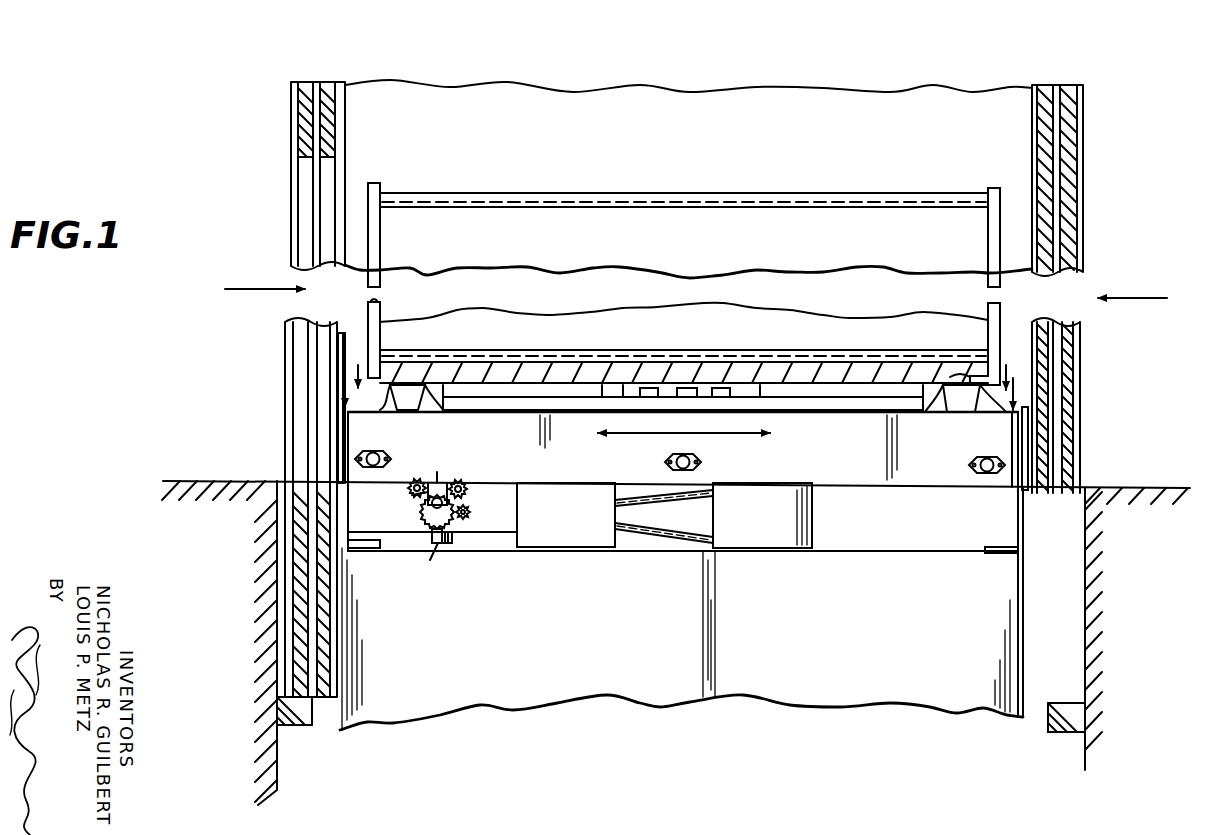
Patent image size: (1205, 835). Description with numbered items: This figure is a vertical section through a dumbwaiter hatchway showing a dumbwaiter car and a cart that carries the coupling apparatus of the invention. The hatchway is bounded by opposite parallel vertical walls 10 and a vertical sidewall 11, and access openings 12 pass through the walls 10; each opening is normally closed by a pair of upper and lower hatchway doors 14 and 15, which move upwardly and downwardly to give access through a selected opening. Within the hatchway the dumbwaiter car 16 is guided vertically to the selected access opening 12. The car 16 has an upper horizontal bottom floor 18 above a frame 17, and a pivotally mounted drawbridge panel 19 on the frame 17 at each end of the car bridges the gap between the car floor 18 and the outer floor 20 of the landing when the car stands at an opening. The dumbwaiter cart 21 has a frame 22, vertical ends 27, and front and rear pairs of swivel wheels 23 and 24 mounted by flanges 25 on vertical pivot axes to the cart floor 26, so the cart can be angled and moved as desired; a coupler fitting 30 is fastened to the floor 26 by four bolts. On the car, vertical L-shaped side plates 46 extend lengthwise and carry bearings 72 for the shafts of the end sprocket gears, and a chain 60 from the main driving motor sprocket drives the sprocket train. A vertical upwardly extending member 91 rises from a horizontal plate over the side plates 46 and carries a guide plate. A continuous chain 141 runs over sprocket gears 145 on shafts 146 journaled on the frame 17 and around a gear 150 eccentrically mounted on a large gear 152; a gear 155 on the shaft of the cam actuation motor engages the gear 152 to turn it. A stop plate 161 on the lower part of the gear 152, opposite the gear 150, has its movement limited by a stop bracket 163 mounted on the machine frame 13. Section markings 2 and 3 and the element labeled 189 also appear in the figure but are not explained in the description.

The section line arrows 2 is at (680, 375).
The section line indication 3 is at (679, 429).
The vertical walls 10 is at (291, 156).
The vertical sidewall 11 is at (688, 106).
The access openings 12 is at (691, 295).
The machine frame 13 is at (572, 548).
The upper hatchway doors 14 is at (329, 112).
The lower hatchway doors 15 is at (1062, 252).
The dumbwaiter car 16 is at (681, 608).
The frame 17 is at (352, 551).
The upper horizontal bottom floor 18 is at (1006, 482).
The drawbridge panel 19 is at (278, 472).
The outer floor 20 is at (200, 481).
The dumbwaiter cart 21 is at (688, 249).
The frame 22 is at (790, 200).
The front swivel wheels 23 is at (395, 385).
The rear swivel wheels 24 is at (937, 400).
The flanges 25 is at (428, 392).
The floor 26 is at (604, 385).
The vertical ends 27 is at (380, 243).
The coupler fitting 30 is at (710, 387).
The L-shaped side plates 46 is at (348, 412).
The chain 60 is at (664, 548).
The bearings 72 is at (385, 458).
The vertical upwardly extending member 91 is at (790, 403).
The continuous chain 141 is at (442, 482).
The sprocket gears 145 is at (466, 489).
The shafts 146 is at (410, 486).
The gear 150 is at (412, 495).
The large gear 152 is at (420, 515).
The gear 155 is at (468, 514).
The stop plate 161 is at (432, 540).
The stop bracket 163 is at (447, 545).
The drive rod 189 is at (492, 555).